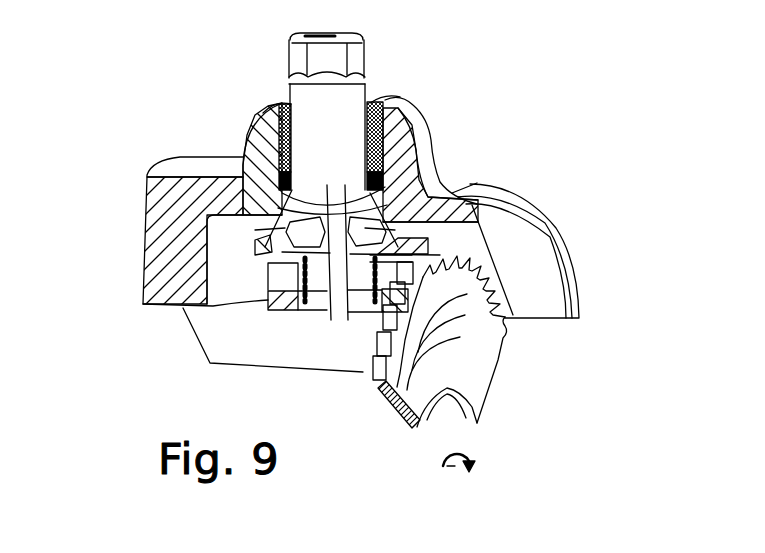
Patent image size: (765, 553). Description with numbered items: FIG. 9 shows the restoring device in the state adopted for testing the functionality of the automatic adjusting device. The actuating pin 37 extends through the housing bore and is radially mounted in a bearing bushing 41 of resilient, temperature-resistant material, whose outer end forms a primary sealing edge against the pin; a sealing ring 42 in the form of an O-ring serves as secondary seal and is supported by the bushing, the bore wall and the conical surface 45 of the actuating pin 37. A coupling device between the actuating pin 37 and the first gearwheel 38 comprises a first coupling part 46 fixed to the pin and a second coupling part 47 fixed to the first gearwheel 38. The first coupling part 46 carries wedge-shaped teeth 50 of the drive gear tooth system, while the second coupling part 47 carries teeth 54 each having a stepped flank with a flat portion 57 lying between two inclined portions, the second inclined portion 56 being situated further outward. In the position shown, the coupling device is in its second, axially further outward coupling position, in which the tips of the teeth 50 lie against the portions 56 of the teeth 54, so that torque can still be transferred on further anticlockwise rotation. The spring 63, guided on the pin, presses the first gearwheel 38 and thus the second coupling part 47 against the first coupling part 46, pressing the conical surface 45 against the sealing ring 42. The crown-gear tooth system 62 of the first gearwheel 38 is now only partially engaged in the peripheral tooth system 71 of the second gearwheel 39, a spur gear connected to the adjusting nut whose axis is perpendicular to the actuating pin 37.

The actuating pin 37 is at (370, 86).
The first gearwheel 38 is at (477, 180).
The second gearwheel 39 is at (507, 360).
The bearing bushing 41 is at (398, 106).
The sealing ring 42 is at (420, 143).
The conical surface 45 is at (407, 137).
The first coupling part 46 is at (318, 213).
The second coupling part 47 is at (282, 200).
The teeth 50 is at (326, 186).
The teeth 54 is at (342, 300).
The second inclined portion 56 is at (352, 187).
The flat portion 57 is at (312, 300).
The tooth system 62 is at (282, 252).
The spring 63 is at (268, 273).
The tooth system 71 is at (375, 355).